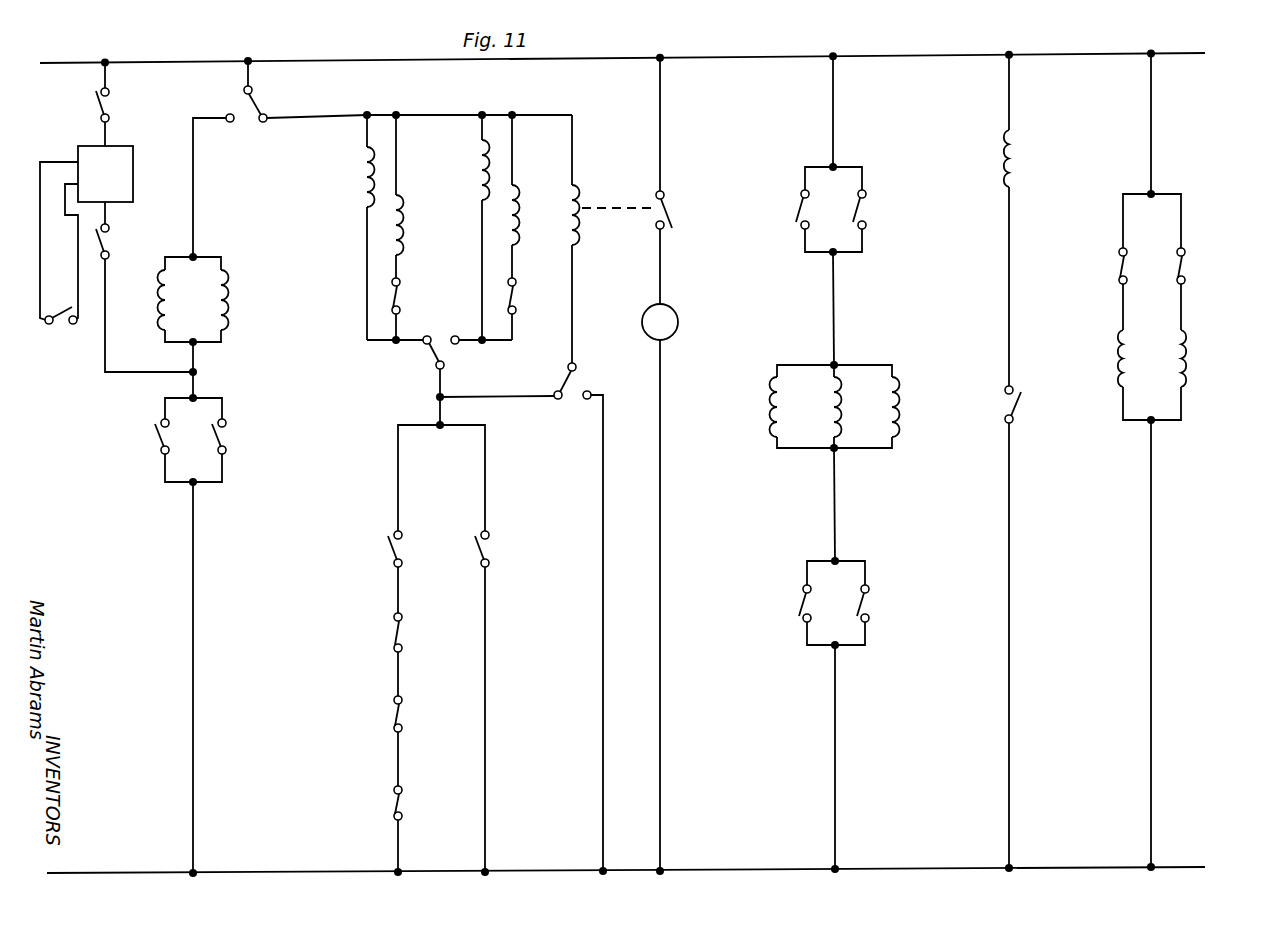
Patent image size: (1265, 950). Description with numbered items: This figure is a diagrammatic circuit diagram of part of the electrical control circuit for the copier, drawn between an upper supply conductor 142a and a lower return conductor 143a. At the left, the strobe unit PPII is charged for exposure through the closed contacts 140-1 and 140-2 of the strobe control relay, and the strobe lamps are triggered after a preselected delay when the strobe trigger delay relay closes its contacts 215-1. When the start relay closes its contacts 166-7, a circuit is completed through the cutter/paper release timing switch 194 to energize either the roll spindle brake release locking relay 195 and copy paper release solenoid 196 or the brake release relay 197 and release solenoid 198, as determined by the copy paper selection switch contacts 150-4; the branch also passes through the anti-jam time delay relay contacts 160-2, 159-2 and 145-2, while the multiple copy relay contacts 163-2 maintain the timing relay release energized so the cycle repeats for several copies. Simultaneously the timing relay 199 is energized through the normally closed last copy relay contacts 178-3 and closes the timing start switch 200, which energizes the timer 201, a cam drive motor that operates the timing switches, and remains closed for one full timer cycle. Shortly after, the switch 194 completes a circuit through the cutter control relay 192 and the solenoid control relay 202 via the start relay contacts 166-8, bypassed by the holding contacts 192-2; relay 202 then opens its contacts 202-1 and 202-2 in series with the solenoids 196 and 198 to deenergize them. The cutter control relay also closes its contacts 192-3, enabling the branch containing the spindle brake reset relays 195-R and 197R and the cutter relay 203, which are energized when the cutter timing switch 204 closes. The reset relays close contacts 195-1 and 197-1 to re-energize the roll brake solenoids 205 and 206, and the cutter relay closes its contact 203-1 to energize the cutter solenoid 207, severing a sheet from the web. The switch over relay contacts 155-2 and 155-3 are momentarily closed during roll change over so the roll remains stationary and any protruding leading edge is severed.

The supply conductor 142a is at (60, 63).
The return conductor 143a is at (78, 873).
The contact of strobe control relay 140-1 is at (110, 103).
The contact of strobe control relay 140-2 is at (110, 240).
The strobe unit PPII is at (105, 174).
The strobe trigger delay relay contact 215-1 is at (62, 326).
The cutter/paper release timing switch 194 is at (258, 104).
The cutter control relay 192 is at (162, 298).
The solenoid control relay 202 is at (228, 308).
The start relay contact 166-8 is at (158, 442).
The holding contact of cutter control relay 192-2 is at (227, 447).
The roll spindle brake release locking relay 195 is at (360, 180).
The roll copy paper release solenoid 196 is at (405, 238).
The roll copy paper spindle brake release relay 197 is at (476, 180).
The roll copy paper release solenoid 198 is at (522, 222).
The timing relay 199 is at (582, 196).
The solenoid control relay contact 202-1 is at (400, 297).
The solenoid control relay contact 202-2 is at (516, 297).
The copy paper selection switch contacts 150-4 is at (442, 356).
The last copy relay contacts 178-3 is at (574, 382).
The start relay contact 166-7 is at (390, 553).
The multiple copy relay contact 163-2 is at (488, 553).
The anti-jam time delay relay contact 160-2 is at (394, 633).
The anti-jam time delay relay contact 159-2 is at (394, 716).
The anti-jam time delay relay contact 145-2 is at (394, 804).
The timing start switch 200 is at (668, 210).
The timer 201 is at (679, 322).
The cutter timing switch 204 is at (798, 204).
The switch over relay contact 155-2 is at (865, 214).
The spindle brake release reset relay 195-R is at (770, 418).
The spindle brake release reset relay 197R is at (843, 412).
The cutter relay 203 is at (888, 412).
The cutter control relay contact 192-3 is at (800, 600).
The switch over relay contact 155-3 is at (867, 605).
The cutter solenoid 207 is at (1016, 172).
The cutter relay contact 203-1 is at (1014, 408).
The spindle brake reset relay contact 195-1 is at (1118, 272).
The spindle brake reset relay contact 197-1 is at (1185, 273).
The roll brake solenoid 205 is at (1118, 358).
The roll brake solenoid 206 is at (1188, 368).